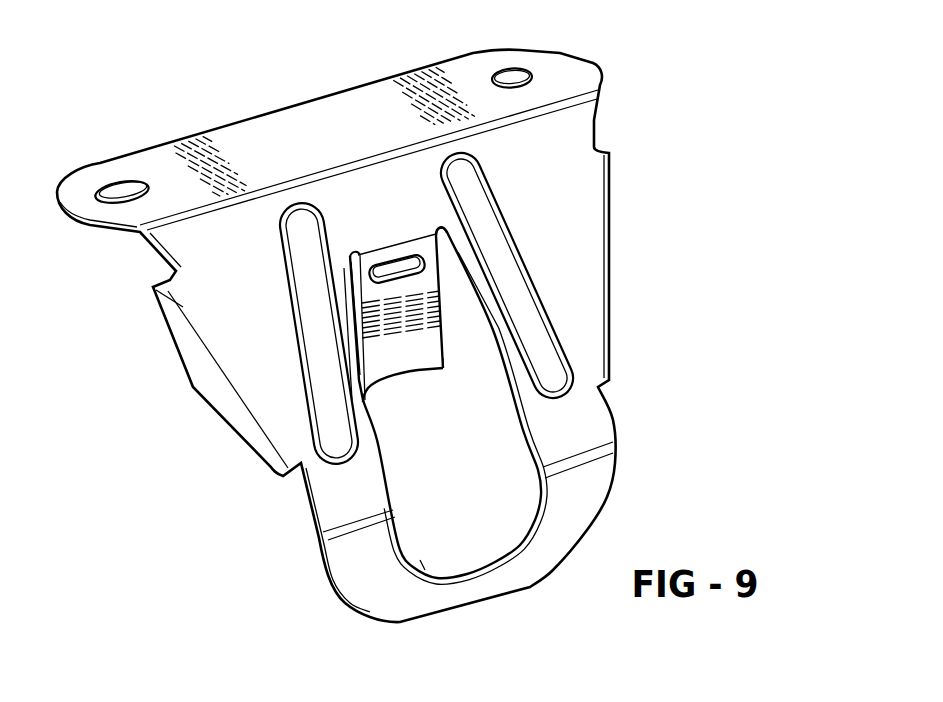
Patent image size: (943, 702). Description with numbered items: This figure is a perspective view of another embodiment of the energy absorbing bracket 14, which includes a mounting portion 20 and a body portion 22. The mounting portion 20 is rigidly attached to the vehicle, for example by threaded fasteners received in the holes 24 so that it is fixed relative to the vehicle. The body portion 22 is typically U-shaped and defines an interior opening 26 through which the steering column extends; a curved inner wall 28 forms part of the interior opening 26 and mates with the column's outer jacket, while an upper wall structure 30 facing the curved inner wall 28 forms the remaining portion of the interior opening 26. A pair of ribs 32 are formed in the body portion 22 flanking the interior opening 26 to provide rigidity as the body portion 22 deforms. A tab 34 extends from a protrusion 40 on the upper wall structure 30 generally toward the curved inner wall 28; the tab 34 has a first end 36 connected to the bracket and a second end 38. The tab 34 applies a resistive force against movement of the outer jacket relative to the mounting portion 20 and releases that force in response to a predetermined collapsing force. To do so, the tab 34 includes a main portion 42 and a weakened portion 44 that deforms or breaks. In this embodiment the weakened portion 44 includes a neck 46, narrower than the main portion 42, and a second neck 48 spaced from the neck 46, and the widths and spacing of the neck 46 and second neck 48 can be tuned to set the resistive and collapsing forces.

The energy absorbing bracket 14 is at (655, 97).
The mounting portion 20 is at (258, 137).
The body portion 22 is at (343, 568).
The holes 24 is at (114, 184).
The interior opening 26 is at (503, 453).
The curved inner wall 28 is at (483, 572).
The upper wall structure 30 is at (387, 228).
The rib 32 is at (312, 337).
The tab 34 is at (385, 358).
The first end 36 is at (430, 238).
The second end 38 is at (420, 372).
The protrusion 40 is at (377, 242).
The main portion 42 is at (363, 345).
The weakened portion 44 is at (360, 262).
The neck 46 is at (357, 292).
The second neck 48 is at (432, 272).